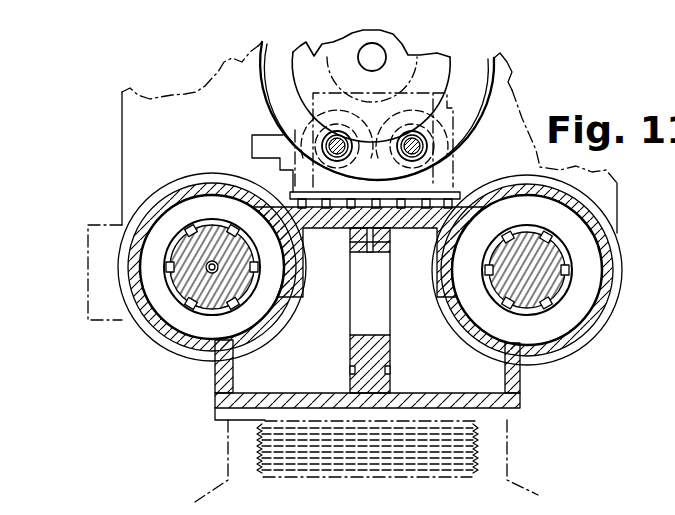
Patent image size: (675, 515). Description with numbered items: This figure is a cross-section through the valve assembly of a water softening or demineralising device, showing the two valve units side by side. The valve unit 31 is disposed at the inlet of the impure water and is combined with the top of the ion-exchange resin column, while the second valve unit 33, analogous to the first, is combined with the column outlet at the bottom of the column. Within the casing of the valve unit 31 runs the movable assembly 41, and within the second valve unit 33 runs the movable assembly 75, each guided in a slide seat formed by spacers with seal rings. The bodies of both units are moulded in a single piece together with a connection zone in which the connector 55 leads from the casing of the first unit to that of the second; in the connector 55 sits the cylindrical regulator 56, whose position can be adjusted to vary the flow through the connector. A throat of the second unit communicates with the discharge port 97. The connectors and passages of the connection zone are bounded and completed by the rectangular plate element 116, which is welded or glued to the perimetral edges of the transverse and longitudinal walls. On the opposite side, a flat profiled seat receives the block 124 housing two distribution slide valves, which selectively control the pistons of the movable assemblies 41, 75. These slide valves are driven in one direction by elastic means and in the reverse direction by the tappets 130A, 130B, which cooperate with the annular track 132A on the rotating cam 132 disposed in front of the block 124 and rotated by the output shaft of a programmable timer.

The valve unit 31 is at (171, 183).
The second valve unit 33 is at (510, 178).
The movable assembly 41 is at (565, 290).
The connector 55 is at (248, 363).
The cylindrical regulator 56 is at (388, 352).
The movable assembly 75 is at (250, 298).
The discharge port 97 is at (124, 322).
The plate element 116 is at (513, 415).
The block 124 is at (500, 88).
The tappet 130A is at (427, 143).
The tappet 130B is at (323, 141).
The rotating cam 132 is at (505, 72).
The annular track 132A is at (254, 45).